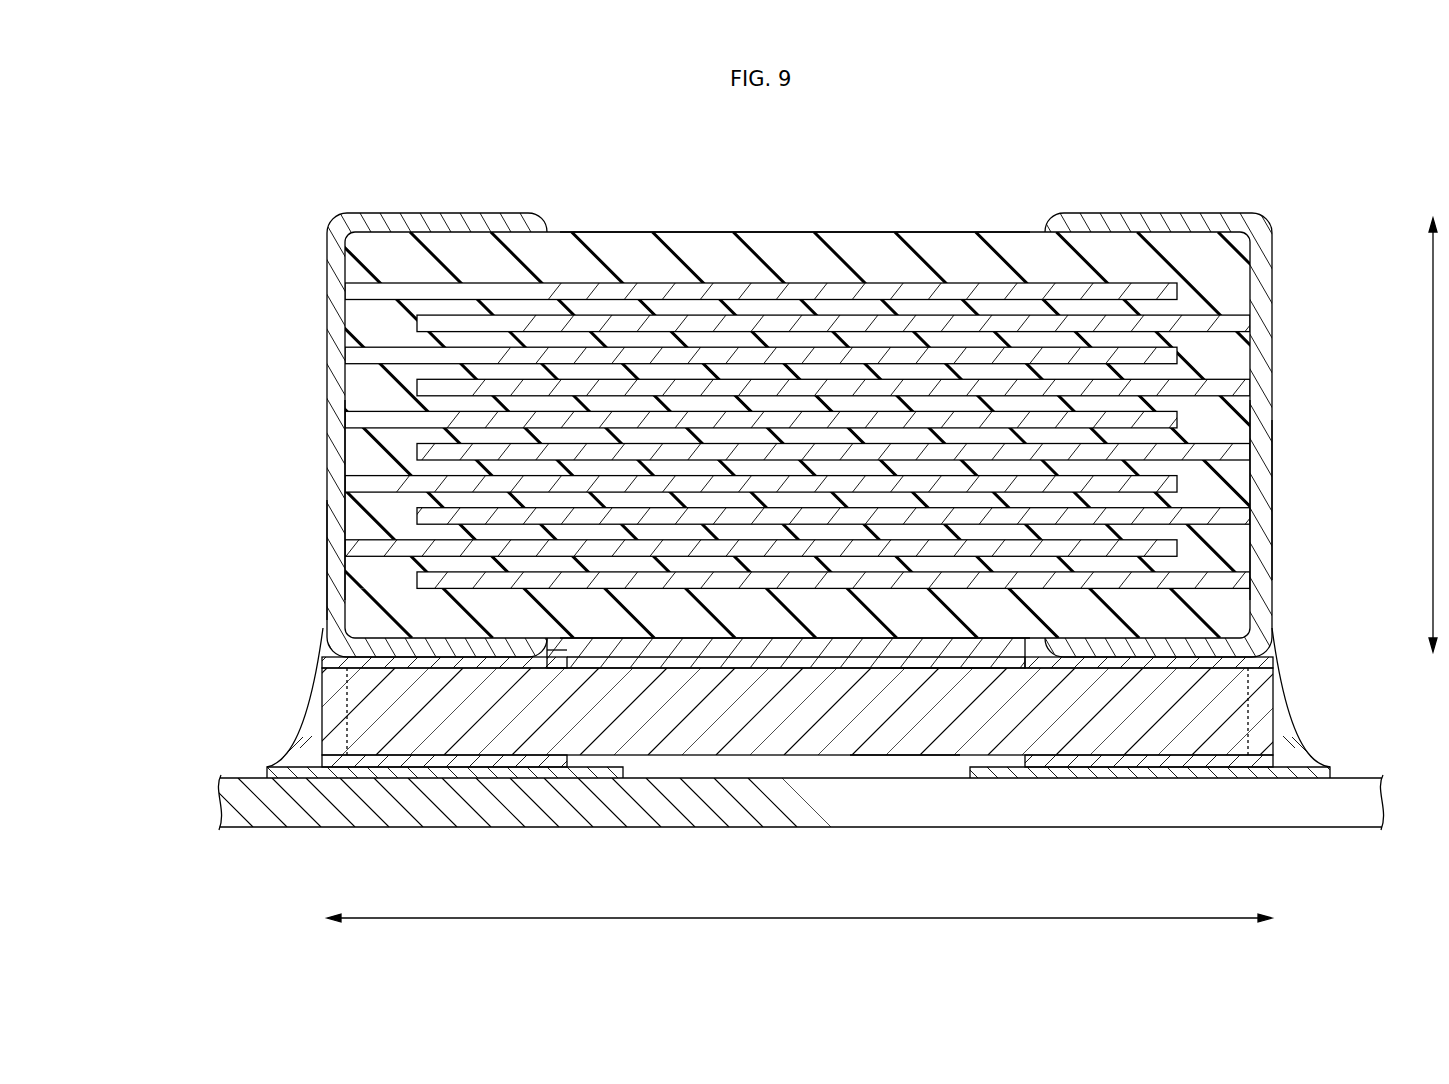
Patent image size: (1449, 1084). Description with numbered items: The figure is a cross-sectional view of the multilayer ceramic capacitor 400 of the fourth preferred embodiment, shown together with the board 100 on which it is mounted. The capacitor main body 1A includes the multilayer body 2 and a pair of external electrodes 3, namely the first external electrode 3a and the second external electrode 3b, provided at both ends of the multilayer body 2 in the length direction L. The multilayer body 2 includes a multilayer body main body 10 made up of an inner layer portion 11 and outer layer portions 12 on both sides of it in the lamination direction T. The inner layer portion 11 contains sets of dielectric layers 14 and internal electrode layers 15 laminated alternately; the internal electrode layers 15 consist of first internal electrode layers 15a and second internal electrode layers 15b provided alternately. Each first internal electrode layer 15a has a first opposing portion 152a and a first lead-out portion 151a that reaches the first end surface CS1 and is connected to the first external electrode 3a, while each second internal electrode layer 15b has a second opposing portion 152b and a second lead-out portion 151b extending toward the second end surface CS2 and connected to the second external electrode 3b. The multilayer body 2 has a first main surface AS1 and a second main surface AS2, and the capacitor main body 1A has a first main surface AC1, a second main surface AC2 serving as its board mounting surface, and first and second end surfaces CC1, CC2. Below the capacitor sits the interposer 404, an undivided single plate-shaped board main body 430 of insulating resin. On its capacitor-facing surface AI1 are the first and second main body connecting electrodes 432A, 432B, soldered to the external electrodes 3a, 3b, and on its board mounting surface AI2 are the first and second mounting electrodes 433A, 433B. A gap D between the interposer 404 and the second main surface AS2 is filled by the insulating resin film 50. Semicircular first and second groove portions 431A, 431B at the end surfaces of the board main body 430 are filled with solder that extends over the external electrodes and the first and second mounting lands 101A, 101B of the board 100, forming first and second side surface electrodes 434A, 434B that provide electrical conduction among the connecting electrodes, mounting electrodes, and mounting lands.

The multilayer ceramic capacitor 400 is at (1124, 134).
The capacitor main body 1A is at (552, 140).
The multilayer body 2 is at (590, 232).
The external electrodes 3 is at (764, 395).
The first external electrode 3a is at (433, 213).
The second external electrode 3b is at (1207, 222).
The multilayer body main body 10 is at (132, 233).
The inner layer portion 11 is at (415, 589).
The outer layer portions 12 is at (382, 258).
The dielectric layers 14 is at (365, 318).
The internal electrode layers 15 is at (809, 435).
The first internal electrode layers 15a is at (237, 333).
The second internal electrode layers 15b is at (1360, 363).
The first lead-out portion 151a is at (365, 350).
The first opposing portion 152a is at (443, 360).
The second lead-out portion 151b is at (1237, 390).
The second opposing portion 152b is at (1142, 395).
The multilayer body first main surface AS1 is at (795, 188).
The capacitor first main surface AC1 is at (920, 232).
The multilayer body second main surface AS2 is at (631, 765).
The capacitor second main surface AC2 is at (832, 640).
The multilayer body first end surface CS1 is at (343, 512).
The multilayer body second end surface CS2 is at (1252, 548).
The capacitor first end surface CC1 is at (332, 560).
The capacitor second end surface CC2 is at (1270, 486).
The insulating resin film 50 is at (773, 660).
The gap D is at (565, 658).
The interposer 404 is at (384, 716).
The board main body 430 is at (733, 733).
The first groove portion 431A is at (340, 728).
The second groove portion 431B is at (1255, 705).
The first main body connecting electrode 432A is at (470, 662).
The second main body connecting electrode 432B is at (1127, 662).
The first mounting electrode 433A is at (540, 760).
The second mounting electrode 433B is at (1046, 758).
The first side surface electrode 434A is at (305, 755).
The second side surface electrode 434B is at (1290, 755).
The capacitor-facing surface AI1 is at (930, 664).
The board mounting surface AI2 is at (903, 756).
The board 100 is at (1348, 792).
The first mounting land 101A is at (388, 772).
The second mounting land 101B is at (1202, 772).
The lamination direction T is at (1439, 435).
The length direction L is at (799, 936).